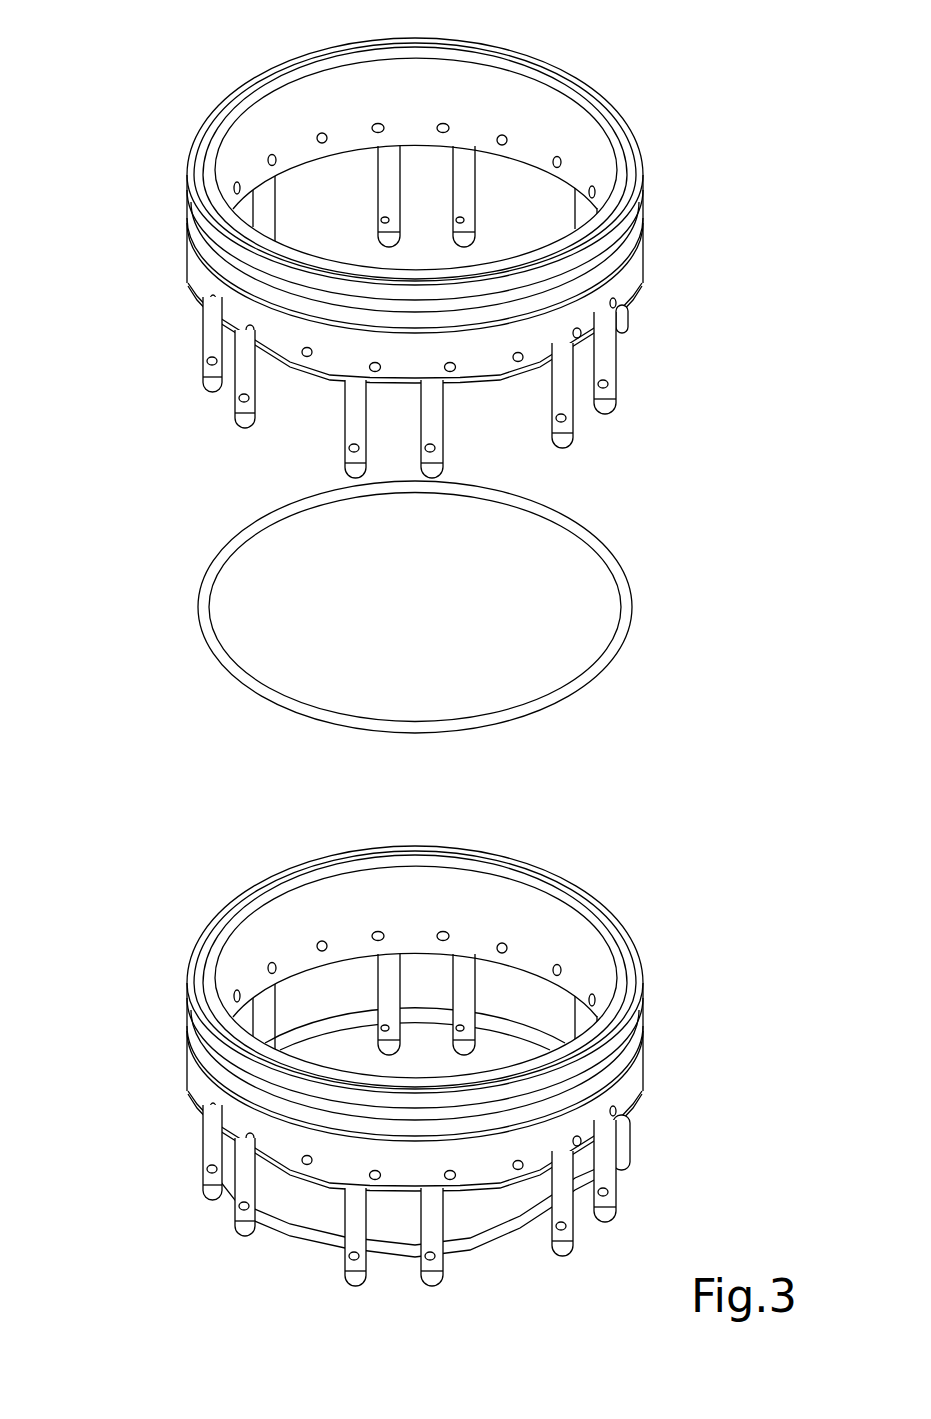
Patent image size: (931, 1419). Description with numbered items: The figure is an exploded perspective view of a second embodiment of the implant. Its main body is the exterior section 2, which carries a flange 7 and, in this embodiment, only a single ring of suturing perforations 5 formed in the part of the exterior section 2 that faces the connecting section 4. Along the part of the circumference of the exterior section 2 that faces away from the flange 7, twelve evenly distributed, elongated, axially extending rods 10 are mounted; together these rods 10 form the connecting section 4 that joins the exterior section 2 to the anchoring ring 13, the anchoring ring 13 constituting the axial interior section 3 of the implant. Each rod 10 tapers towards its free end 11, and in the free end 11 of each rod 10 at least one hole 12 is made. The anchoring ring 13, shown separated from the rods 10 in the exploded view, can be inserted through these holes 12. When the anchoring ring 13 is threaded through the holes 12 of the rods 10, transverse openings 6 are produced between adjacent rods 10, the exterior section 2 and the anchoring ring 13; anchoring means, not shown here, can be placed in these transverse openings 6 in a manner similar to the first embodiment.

The exterior section 2 is at (187, 188).
The interior section 3 is at (623, 1132).
The connecting section 4 is at (638, 319).
The suturing perforations 5 is at (372, 128).
The transverse openings 6 is at (305, 1212).
The flange 7 is at (609, 115).
The rods 10 is at (200, 337).
The free end 11 is at (242, 437).
The hole 12 is at (207, 394).
The anchoring ring 13 is at (632, 632).